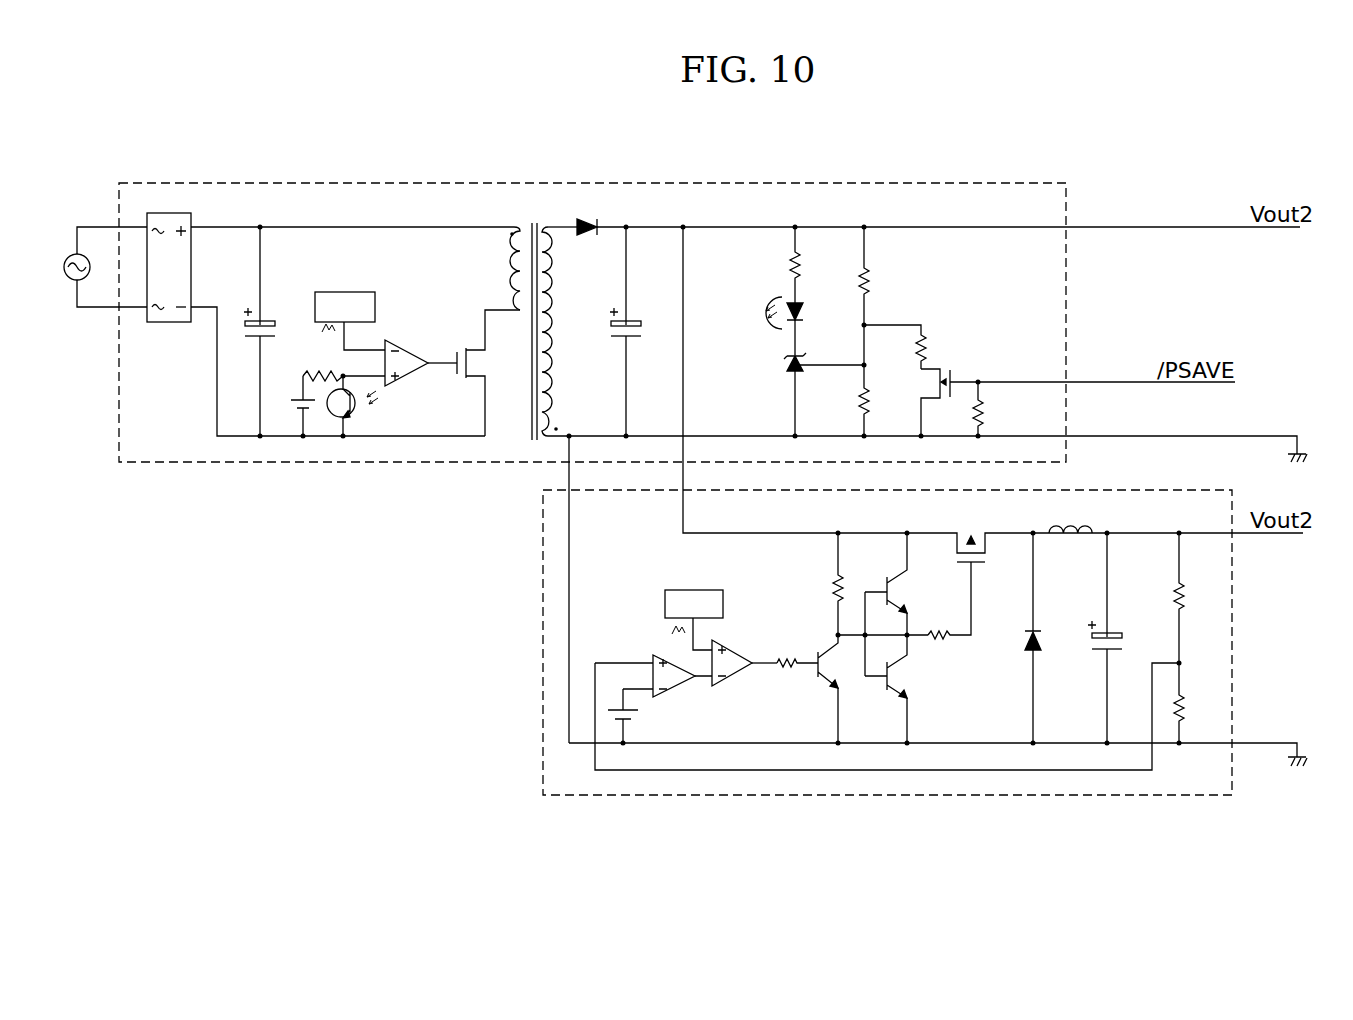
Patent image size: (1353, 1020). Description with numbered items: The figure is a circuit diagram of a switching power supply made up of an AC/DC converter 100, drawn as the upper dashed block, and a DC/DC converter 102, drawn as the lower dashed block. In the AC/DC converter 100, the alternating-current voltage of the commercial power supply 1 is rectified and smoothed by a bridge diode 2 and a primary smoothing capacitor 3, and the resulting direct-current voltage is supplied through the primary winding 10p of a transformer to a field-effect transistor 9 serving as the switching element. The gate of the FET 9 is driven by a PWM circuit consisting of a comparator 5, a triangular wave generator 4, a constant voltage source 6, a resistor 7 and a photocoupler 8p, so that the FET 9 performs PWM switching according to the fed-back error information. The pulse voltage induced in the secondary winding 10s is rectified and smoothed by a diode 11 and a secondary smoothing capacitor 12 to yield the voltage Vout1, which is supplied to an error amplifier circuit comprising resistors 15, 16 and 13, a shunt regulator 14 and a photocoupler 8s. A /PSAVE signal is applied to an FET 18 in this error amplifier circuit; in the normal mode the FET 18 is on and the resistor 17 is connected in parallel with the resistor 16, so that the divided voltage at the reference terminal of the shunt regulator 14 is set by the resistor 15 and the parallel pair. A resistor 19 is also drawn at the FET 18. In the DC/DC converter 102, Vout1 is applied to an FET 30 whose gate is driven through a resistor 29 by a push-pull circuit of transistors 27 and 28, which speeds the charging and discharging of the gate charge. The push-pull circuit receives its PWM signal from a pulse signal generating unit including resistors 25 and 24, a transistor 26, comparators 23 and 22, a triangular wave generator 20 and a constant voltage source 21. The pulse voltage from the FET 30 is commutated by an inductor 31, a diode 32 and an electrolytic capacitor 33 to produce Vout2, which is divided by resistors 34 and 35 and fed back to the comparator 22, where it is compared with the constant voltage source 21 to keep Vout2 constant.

The commercial power supply 1 is at (69, 256).
The bridge diode 2 is at (173, 323).
The primary smoothing capacitor 3 is at (262, 322).
The triangular wave generator 4 is at (348, 292).
The comparator 5 is at (402, 347).
The constant voltage source 6 is at (298, 397).
The resistor 7 is at (318, 370).
The photocoupler 8p is at (364, 409).
The photocoupler 8s is at (803, 296).
The field-effect transistor 9 is at (459, 372).
The primary winding 10p is at (514, 227).
The secondary winding 10s is at (550, 227).
The diode 11 is at (585, 241).
The secondary smoothing capacitor 12 is at (632, 338).
The resistor 13 is at (788, 270).
The shunt regulator 14 is at (786, 372).
The resistor 15 is at (871, 284).
The resistor 16 is at (871, 400).
The resistor 17 is at (931, 342).
The FET 18 is at (953, 381).
The resistor 19 is at (990, 408).
The triangular wave generator 20 is at (674, 592).
The constant voltage source 21 is at (634, 724).
The comparator 22 is at (651, 656).
The comparator 23 is at (739, 679).
The resistor 24 is at (791, 672).
The resistor 25 is at (828, 581).
The transistor 26 is at (816, 652).
The transistor 27 is at (886, 579).
The transistor 28 is at (882, 692).
The resistor 29 is at (945, 640).
The FET 30 is at (976, 566).
The inductor 31 is at (1071, 546).
The diode 32 is at (1036, 652).
The electrolytic capacitor 33 is at (1111, 638).
The resistor 34 is at (1185, 586).
The resistor 35 is at (1185, 696).
The AC/DC converter 100 is at (625, 183).
The DC/DC converter 102 is at (835, 795).